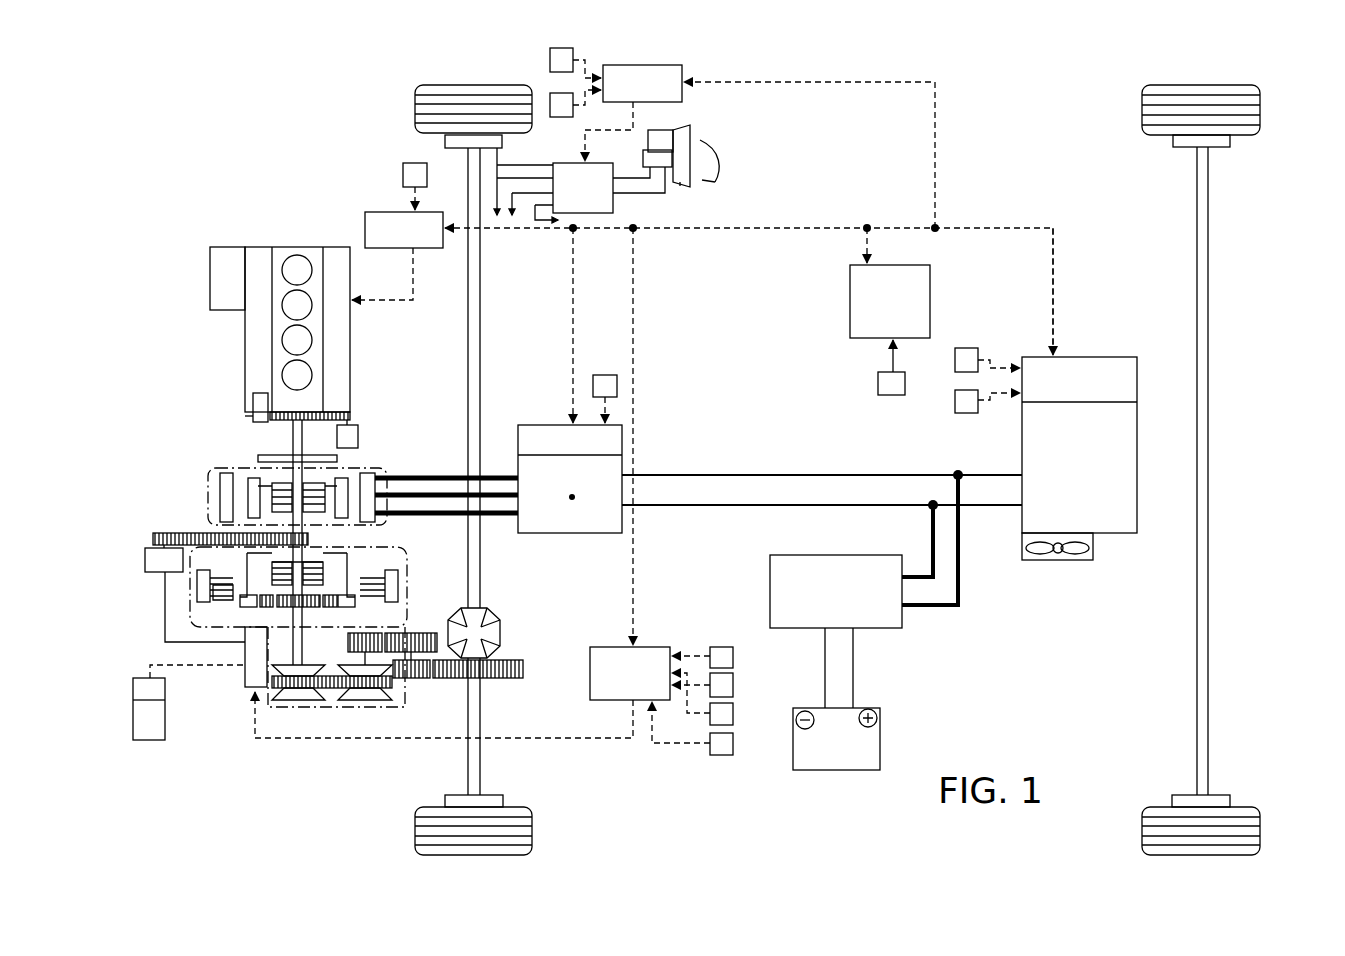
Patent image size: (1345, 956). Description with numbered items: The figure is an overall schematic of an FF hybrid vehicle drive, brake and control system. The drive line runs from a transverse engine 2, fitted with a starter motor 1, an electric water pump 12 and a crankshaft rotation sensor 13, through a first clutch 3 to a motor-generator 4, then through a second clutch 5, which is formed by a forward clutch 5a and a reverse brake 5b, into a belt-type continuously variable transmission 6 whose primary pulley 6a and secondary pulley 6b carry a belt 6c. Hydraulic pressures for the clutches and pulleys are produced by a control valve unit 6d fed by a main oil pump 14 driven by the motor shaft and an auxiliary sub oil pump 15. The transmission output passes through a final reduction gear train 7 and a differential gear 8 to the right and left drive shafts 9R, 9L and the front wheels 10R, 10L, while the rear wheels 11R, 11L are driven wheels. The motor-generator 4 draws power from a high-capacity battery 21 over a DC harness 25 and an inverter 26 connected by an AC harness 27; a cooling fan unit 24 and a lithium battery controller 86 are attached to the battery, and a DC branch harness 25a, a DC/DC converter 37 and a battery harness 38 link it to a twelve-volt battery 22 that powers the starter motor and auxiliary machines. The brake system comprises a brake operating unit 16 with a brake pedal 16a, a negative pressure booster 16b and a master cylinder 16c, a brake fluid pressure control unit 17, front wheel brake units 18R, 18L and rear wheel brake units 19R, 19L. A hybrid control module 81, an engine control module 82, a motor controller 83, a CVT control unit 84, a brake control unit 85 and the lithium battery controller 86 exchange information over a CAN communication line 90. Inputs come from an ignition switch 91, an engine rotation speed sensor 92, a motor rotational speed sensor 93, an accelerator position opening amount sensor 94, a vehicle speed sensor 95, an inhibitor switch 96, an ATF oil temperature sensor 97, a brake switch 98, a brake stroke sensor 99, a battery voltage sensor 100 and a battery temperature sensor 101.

The starter motor 1 is at (350, 437).
The transverse engine 2 is at (317, 255).
The first clutch 3 is at (282, 497).
The motor-generator 4 is at (226, 497).
The second clutch 5 is at (203, 613).
The forward clutch 5a is at (313, 572).
The reverse brake 5b is at (222, 600).
The belt-type continuously variable transmission 6 is at (305, 712).
The primary pulley 6a is at (310, 700).
The secondary pulley 6b is at (365, 700).
The belt 6c is at (335, 680).
The control valve unit 6d is at (247, 680).
The final reduction gear train 7 is at (418, 682).
The differential gear 8 is at (484, 620).
The right drive shaft 9R is at (490, 268).
The left drive shaft 9L is at (482, 760).
The right front wheel 10R is at (415, 112).
The left front wheel 10L is at (415, 832).
The right rear wheel 11R is at (1260, 105).
The left rear wheel 11L is at (1260, 828).
The electric water pump 12 is at (218, 252).
The crankshaft rotation sensor 13 is at (253, 400).
The main oil pump 14 is at (155, 560).
The sub oil pump 15 is at (150, 742).
The brake operating unit 16 is at (692, 128).
The brake pedal 16a is at (722, 185).
The negative pressure booster 16b is at (682, 187).
The master cylinder 16c is at (645, 158).
The brake fluid pressure control unit 17 is at (610, 212).
The right front wheel brake unit 18R is at (455, 150).
The left front wheel brake unit 18L is at (500, 798).
The right rear wheel brake unit 19R is at (1182, 150).
The left rear wheel brake unit 19L is at (1185, 795).
The high-capacity battery 21 is at (1125, 427).
The 12V battery 22 is at (805, 757).
The cooling fan unit 24 is at (1058, 556).
The DC harness 25 is at (690, 503).
The DC branch harness 25a is at (960, 585).
The inverter 26 is at (572, 500).
The AC harness 27 is at (448, 477).
The DC/DC converter 37 is at (780, 610).
The battery harness 38 is at (826, 665).
The hybrid control module 81 is at (882, 262).
The engine control module 82 is at (385, 211).
The motor controller 83 is at (535, 425).
The CVT control unit 84 is at (590, 676).
The brake control unit 85 is at (643, 65).
The lithium battery controller 86 is at (1122, 376).
The CAN communication line 90 is at (815, 225).
The ignition switch 91 is at (893, 396).
The engine rotation speed sensor 92 is at (412, 163).
The motor rotational speed sensor 93 is at (608, 375).
The accelerator position opening amount sensor 94 is at (735, 655).
The vehicle speed sensor 95 is at (735, 685).
The inhibitor switch 96 is at (735, 714).
The ATF oil temperature sensor 97 is at (735, 745).
The brake switch 98 is at (550, 58).
The brake stroke sensor 99 is at (562, 117).
The battery voltage sensor 100 is at (966, 348).
The battery temperature sensor 101 is at (966, 413).